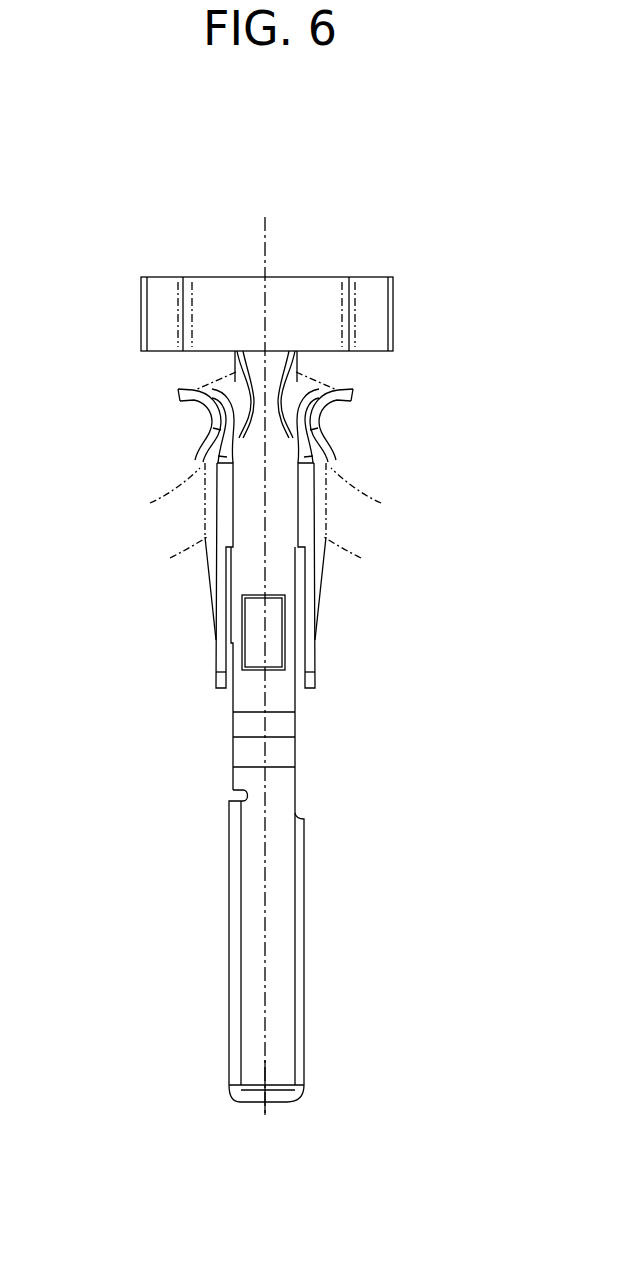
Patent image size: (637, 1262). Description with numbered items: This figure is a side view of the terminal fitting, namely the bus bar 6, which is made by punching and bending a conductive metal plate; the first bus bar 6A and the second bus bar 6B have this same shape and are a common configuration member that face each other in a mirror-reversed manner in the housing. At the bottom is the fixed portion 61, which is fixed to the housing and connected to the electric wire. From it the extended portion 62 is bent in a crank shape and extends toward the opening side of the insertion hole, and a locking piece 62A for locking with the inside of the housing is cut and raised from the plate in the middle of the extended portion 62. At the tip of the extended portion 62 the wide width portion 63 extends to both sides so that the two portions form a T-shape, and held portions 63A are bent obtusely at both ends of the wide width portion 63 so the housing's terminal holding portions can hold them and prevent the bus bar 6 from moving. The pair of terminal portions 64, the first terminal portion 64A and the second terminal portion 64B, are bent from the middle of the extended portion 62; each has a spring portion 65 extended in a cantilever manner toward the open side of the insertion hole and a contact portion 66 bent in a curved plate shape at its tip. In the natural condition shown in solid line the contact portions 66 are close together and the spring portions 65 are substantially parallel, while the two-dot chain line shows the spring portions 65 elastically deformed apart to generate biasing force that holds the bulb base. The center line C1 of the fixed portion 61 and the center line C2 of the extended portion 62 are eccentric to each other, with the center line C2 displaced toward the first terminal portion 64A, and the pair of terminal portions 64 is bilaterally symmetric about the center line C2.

The bus bar 6 is at (137, 246).
The first bus bar 6A is at (138, 538).
The second bus bar 6B is at (393, 538).
The center line of the extended portion C2 is at (265, 233).
The wide width portion 63 is at (325, 278).
The held portion 63A is at (158, 302).
The contact portion 66 is at (294, 368).
The terminal portions 64 is at (266, 538).
The first terminal portion 64A is at (218, 502).
The second terminal portion 64B is at (313, 502).
The spring portion 65 is at (207, 548).
The extended portion 62 is at (278, 571).
The locking piece 62A is at (272, 612).
The fixed portion 61 is at (304, 892).
The center line of the fixed portion C1 is at (265, 1018).